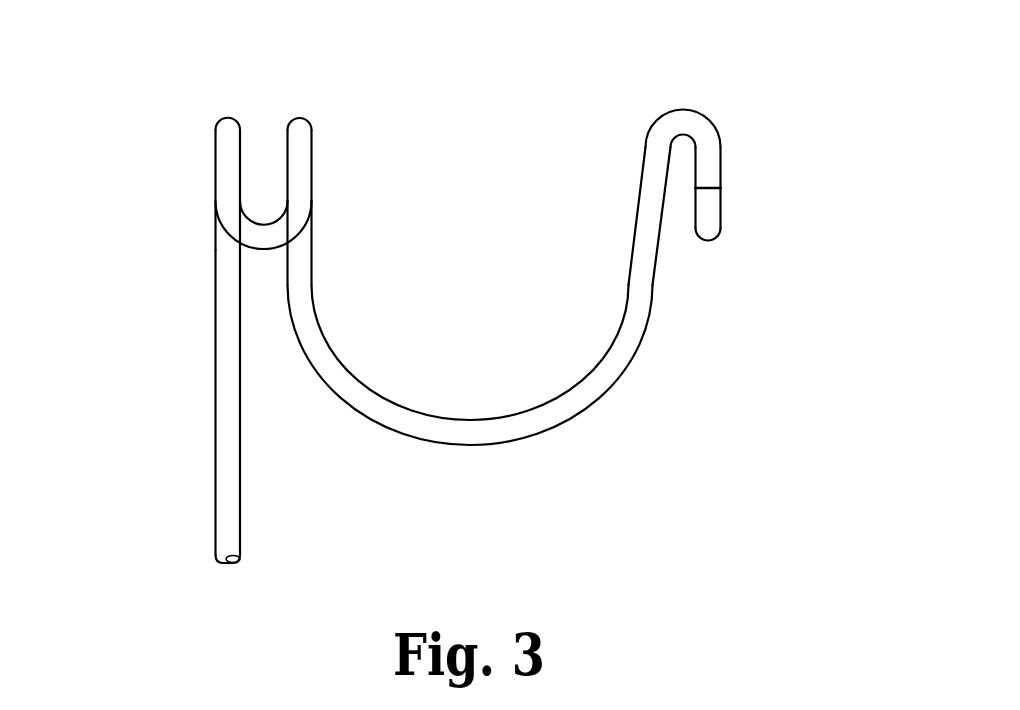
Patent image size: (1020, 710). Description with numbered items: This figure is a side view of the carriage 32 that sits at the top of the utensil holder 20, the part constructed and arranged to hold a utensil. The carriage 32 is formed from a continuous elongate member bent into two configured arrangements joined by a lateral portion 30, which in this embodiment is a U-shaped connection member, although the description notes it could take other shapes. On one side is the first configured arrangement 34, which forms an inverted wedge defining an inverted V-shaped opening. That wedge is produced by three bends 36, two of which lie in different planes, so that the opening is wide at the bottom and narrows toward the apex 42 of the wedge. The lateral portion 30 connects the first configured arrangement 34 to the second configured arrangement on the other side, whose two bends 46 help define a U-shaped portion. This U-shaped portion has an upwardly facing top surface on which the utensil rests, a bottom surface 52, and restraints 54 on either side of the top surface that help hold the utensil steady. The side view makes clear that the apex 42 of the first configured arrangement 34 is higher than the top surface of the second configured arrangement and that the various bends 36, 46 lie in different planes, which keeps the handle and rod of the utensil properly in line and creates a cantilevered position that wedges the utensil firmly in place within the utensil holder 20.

The utensil holder 20 is at (716, 40).
The lateral portion 30 is at (473, 439).
The carriage 32 is at (170, 117).
The first configured arrangement 34 is at (322, 119).
The bends 36 is at (306, 118).
The apex 42 is at (214, 117).
The bends 46 is at (683, 109).
The bottom surface 52 is at (703, 243).
The restraints 54 is at (710, 170).